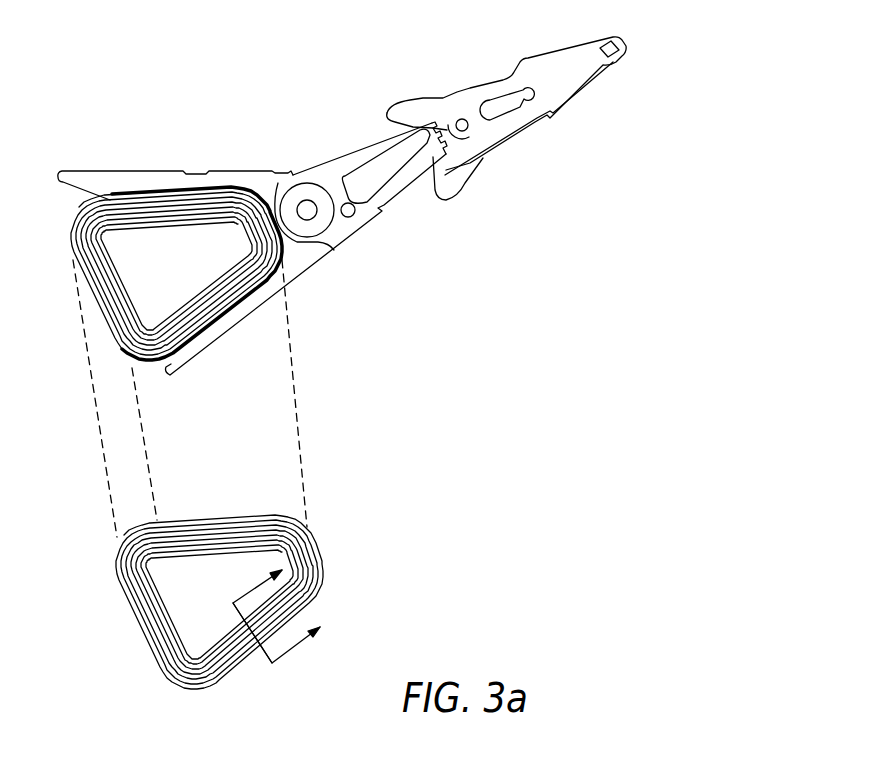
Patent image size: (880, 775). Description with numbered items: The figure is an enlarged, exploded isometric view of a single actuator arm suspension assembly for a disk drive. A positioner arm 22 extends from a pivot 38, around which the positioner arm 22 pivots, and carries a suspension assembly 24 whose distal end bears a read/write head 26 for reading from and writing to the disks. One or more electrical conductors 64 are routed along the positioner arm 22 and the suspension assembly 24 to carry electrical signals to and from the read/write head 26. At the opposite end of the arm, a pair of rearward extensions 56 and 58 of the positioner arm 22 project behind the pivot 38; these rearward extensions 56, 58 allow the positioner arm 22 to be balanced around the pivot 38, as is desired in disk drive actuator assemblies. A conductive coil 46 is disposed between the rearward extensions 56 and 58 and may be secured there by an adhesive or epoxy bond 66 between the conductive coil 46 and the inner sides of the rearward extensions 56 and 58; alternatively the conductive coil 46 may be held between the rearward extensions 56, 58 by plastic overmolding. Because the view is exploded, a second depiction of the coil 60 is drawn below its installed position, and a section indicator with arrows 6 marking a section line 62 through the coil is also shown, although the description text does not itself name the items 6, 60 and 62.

The section line 6- 6 is at (287, 611).
The positioner arm 22 is at (328, 165).
The suspension assembly 24 is at (545, 62).
The read/write head 26 is at (625, 48).
The pivot 38 is at (320, 223).
The conductive coil 46 is at (93, 272).
The rearward extension 56 is at (90, 180).
The rearward extension 58 is at (225, 338).
The coil 60 is at (203, 533).
The section 62 is at (277, 657).
The electrical conductors 64 is at (527, 132).
The adhesive or epoxy bond 66 is at (192, 343).